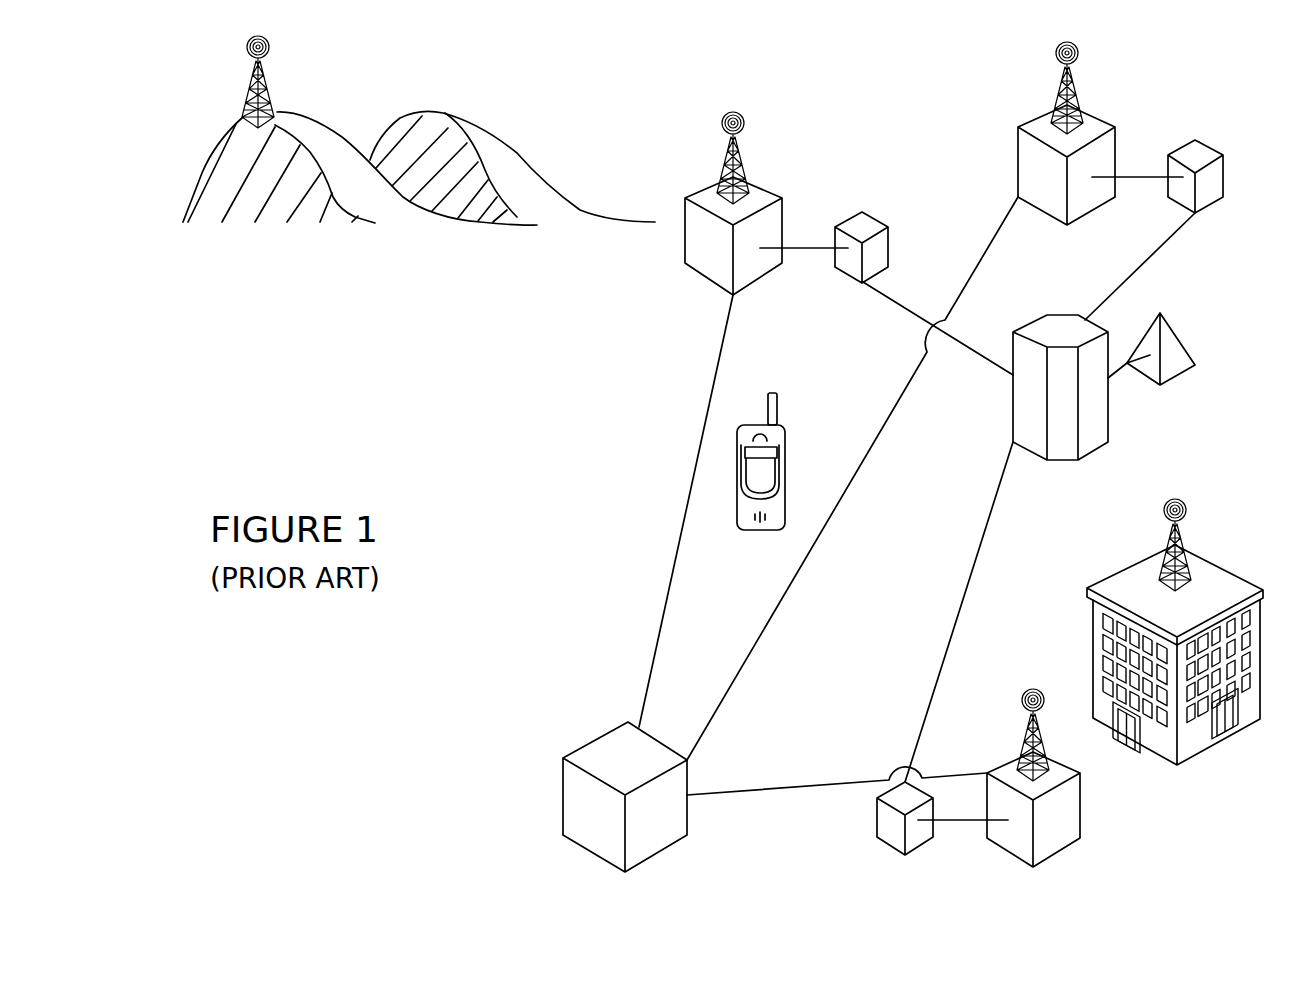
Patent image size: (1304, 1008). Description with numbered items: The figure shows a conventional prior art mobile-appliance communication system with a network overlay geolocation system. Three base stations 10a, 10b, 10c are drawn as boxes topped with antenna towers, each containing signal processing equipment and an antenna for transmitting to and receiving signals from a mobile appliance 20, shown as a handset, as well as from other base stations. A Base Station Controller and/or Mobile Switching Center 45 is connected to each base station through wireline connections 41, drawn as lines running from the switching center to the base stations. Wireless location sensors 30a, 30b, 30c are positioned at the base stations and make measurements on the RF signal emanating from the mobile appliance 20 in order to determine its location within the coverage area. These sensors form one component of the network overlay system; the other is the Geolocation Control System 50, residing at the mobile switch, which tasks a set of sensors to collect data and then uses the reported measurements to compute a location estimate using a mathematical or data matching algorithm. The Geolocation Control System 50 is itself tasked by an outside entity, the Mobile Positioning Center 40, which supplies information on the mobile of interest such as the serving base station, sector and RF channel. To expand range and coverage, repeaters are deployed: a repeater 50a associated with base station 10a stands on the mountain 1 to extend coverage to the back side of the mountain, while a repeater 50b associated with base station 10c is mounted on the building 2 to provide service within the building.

The mountain 1 is at (205, 153).
The building 2 is at (1220, 750).
The base station 10a is at (722, 203).
The base station 10b is at (1058, 133).
The base station 10c is at (1042, 782).
The mobile appliance 20 is at (785, 445).
The wireless location sensor 30a is at (862, 210).
The wireless location sensor 30b is at (1194, 140).
The wireless location sensor 30c is at (900, 858).
The Mobile Positioning Center 40 is at (1168, 322).
The wireline connection 41 is at (828, 504).
The Mobile Switching Center 45 is at (620, 725).
The Geolocation Control System 50 is at (1062, 313).
The repeater 50a is at (279, 93).
The repeater 50b is at (1213, 548).